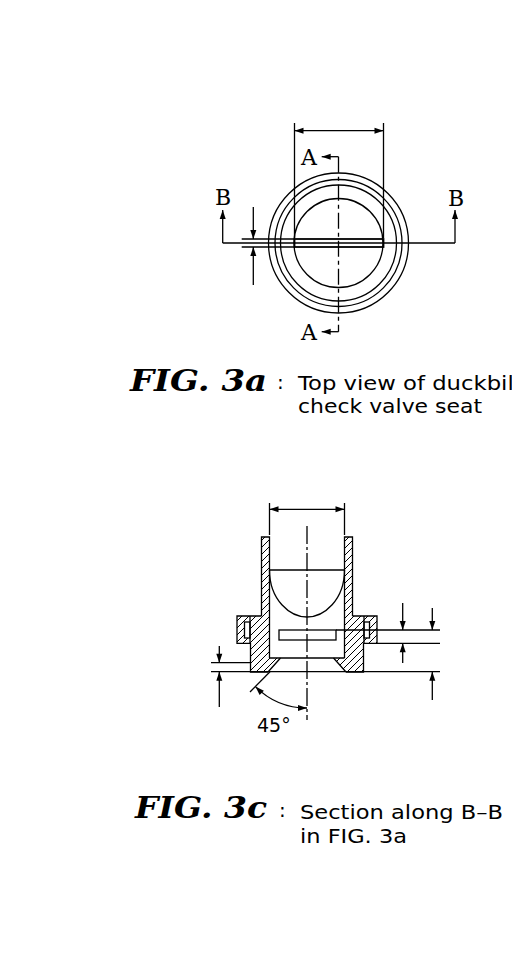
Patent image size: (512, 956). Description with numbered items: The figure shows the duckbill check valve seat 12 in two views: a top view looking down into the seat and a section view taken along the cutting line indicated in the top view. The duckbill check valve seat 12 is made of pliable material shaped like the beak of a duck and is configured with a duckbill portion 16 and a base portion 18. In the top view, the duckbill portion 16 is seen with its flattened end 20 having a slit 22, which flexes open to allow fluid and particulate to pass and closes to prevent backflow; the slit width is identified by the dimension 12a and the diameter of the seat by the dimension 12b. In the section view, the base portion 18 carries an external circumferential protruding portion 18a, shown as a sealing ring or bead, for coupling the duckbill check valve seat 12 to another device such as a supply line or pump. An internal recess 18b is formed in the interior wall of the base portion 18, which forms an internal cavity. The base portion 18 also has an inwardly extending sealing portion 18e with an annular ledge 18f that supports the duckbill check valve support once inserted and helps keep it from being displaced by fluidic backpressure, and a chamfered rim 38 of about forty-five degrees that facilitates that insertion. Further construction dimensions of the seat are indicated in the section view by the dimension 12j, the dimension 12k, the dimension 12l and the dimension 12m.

In FIG. 3a, the duckbill check valve seat 12 is at (250, 137).
In FIG. 3a, the dimension 12a is at (253, 265).
In FIG. 3a, the dimension 12b is at (339, 171).
In FIG. 3c, the dimension 12j is at (307, 508).
In FIG. 3c, the dimension 12k is at (403, 604).
In FIG. 3c, the dimension 12l is at (432, 620).
In FIG. 3c, the dimension 12m is at (219, 697).
In FIG. 3a, the duckbill portion 16 is at (313, 262).
In FIG. 3c, the base portion 18 is at (364, 657).
In FIG. 3c, the external circumferential protruding portion 18a is at (237, 625).
In FIG. 3c, the internal recess 18b is at (329, 627).
In FIG. 3c, the inwardly extending sealing portion 18e is at (266, 668).
In FIG. 3c, the annular ledge 18f is at (278, 654).
In FIG. 3a, the flattened end 20 is at (363, 238).
In FIG. 3c, the flattened end 20 is at (352, 558).
In FIG. 3a, the slit 22 is at (362, 251).
In FIG. 3c, the chamfered rim 38 is at (333, 672).